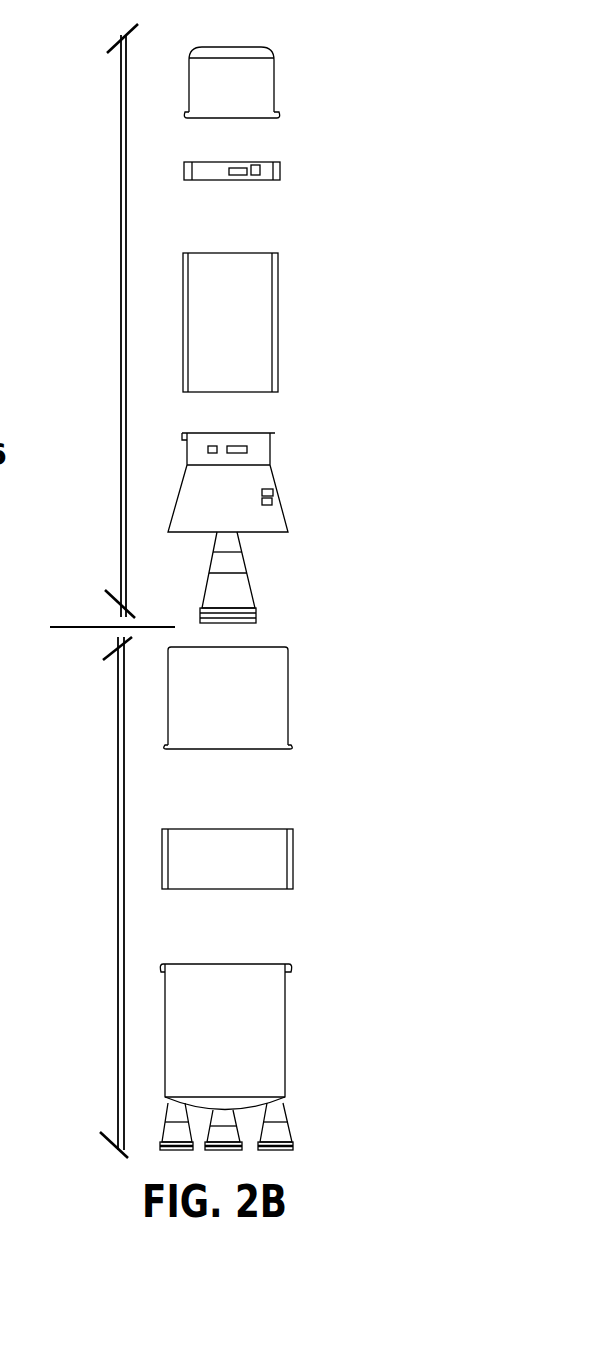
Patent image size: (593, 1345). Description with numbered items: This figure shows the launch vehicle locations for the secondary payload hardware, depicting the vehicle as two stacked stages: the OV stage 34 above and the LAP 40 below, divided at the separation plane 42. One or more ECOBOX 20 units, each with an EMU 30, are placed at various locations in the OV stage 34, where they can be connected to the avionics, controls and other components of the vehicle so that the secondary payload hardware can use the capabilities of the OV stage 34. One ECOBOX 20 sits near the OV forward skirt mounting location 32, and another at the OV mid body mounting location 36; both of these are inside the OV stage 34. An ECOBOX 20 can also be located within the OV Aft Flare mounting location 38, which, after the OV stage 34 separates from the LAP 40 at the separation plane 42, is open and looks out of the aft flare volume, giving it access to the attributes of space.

The ECOBOX 20 is at (244, 165).
The EMU 30 is at (275, 162).
The OV forward skirt mounting location 32 is at (278, 175).
The OV stage 34 is at (123, 340).
The OV mid body mounting location 36 is at (252, 455).
The OV Aft Flare mounting location 38 is at (270, 523).
The LAP 40 is at (118, 932).
The separation plane 42 is at (77, 628).